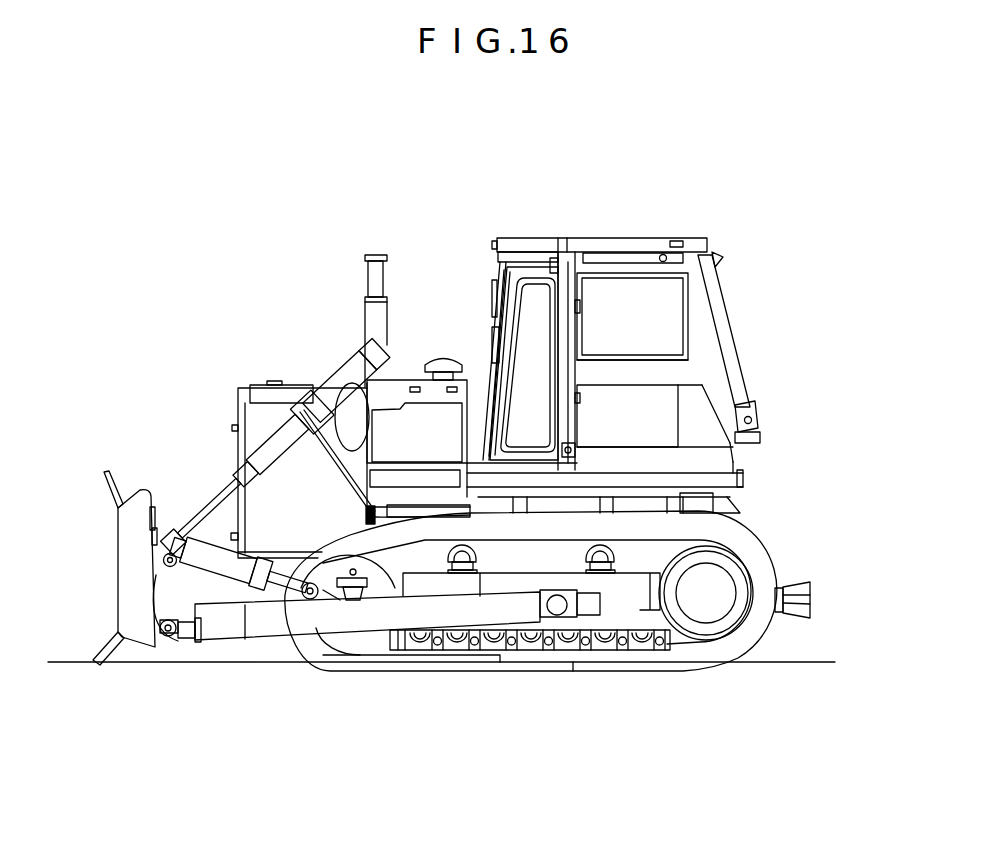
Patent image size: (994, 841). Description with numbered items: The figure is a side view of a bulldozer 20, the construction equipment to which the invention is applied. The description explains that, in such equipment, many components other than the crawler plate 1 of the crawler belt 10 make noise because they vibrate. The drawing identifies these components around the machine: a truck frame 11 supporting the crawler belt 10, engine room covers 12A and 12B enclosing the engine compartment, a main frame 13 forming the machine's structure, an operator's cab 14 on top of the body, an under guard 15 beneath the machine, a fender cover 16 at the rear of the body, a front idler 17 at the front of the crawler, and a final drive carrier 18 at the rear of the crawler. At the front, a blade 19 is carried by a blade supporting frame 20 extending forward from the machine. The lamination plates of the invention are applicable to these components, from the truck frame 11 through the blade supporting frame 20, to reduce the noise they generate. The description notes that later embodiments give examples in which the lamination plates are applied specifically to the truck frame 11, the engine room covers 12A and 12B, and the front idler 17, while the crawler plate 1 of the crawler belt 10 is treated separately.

The crawler plate 1 is at (488, 419).
The crawler belt 10 is at (735, 538).
The truck frame 11 is at (600, 620).
The engine room cover 12A is at (393, 422).
The engine room cover 12B is at (350, 406).
The main frame 13 is at (375, 517).
The operator's cab 14 is at (609, 268).
The under guard 15 is at (243, 583).
The fender cover 16 is at (680, 405).
The front idler 17 is at (372, 578).
The final drive carrier 18 is at (687, 630).
The blade 19 is at (132, 638).
The bulldozer 20 is at (524, 180).